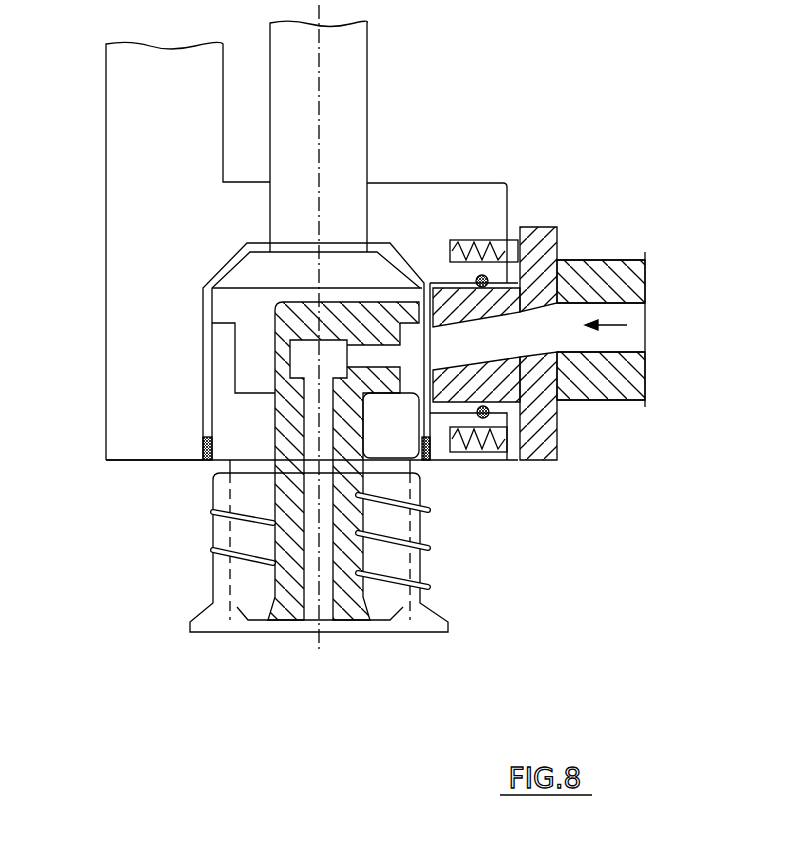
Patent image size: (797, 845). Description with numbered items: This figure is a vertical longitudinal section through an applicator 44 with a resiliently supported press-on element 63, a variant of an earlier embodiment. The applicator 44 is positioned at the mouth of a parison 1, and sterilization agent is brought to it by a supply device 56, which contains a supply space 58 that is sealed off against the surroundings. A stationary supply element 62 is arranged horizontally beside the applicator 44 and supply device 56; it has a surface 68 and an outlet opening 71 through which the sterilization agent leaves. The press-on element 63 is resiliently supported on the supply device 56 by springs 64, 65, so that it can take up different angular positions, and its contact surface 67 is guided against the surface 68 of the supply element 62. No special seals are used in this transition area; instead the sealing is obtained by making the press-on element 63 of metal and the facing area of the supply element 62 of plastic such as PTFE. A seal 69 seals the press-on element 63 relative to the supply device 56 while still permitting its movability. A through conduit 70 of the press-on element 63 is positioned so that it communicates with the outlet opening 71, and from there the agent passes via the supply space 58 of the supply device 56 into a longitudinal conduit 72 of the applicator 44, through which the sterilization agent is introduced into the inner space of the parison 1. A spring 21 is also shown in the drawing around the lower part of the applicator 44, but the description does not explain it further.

The parison 1 is at (215, 622).
The spring 21 is at (430, 547).
The applicator 44 is at (190, 483).
The supply device 56 is at (384, 192).
The supply space 58 is at (222, 343).
The supply element 62 is at (617, 262).
The press-on element 63 is at (542, 230).
The spring 64 is at (487, 250).
The spring 65 is at (497, 450).
The contact surface 67 is at (558, 450).
The surface 68 is at (572, 272).
The seal 69 is at (490, 413).
The through conduit 70 is at (450, 342).
The outlet opening 71 is at (613, 393).
The longitudinal conduit 72 is at (312, 610).